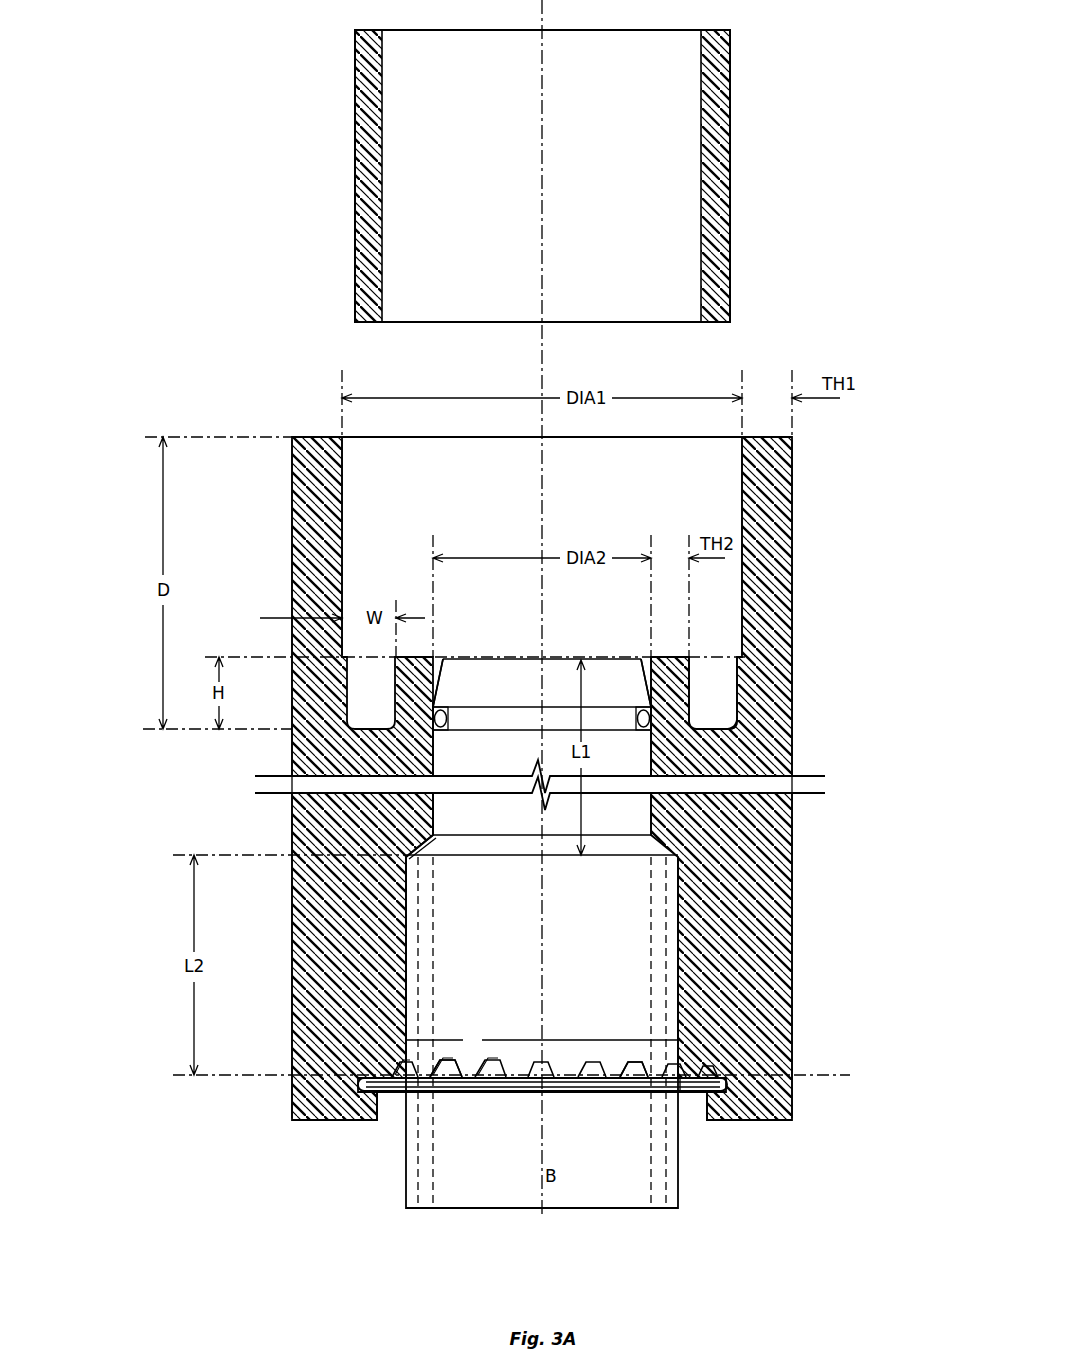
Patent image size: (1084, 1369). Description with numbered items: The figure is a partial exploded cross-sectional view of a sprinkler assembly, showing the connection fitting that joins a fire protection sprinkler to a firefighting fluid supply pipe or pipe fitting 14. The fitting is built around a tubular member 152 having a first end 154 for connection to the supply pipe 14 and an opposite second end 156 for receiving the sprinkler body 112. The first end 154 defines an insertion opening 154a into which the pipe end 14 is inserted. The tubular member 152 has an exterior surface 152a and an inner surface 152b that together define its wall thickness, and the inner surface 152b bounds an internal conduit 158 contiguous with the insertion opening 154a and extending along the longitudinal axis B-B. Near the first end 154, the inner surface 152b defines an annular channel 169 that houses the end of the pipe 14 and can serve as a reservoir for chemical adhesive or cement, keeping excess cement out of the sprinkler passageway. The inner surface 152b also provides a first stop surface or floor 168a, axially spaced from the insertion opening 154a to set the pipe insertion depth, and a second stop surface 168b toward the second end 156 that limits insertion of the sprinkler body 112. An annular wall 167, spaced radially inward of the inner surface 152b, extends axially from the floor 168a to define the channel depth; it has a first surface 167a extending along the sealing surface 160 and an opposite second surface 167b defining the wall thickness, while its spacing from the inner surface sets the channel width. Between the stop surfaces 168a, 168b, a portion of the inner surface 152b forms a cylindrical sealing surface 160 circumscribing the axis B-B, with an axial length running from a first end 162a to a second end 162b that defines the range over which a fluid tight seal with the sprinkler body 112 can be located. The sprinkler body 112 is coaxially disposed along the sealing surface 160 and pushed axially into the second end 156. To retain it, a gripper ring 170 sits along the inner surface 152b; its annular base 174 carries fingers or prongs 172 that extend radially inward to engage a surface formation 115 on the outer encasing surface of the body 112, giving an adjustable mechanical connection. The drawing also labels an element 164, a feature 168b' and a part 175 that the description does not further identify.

The fluid supply pipe or pipe fitting 14 is at (730, 246).
The sprinkler body 112 is at (635, 868).
The surface formation 115 is at (672, 962).
The tubular member 152 is at (725, 812).
The exterior surface 152a is at (292, 551).
The inner surface 152b is at (742, 493).
The first end 154 is at (300, 493).
The insertion opening 154a is at (676, 434).
The second end 156 is at (300, 1120).
The internal conduit 158 is at (520, 533).
The cylindrical sealing surface 160 is at (652, 718).
The first end of sealing surface 162a is at (443, 661).
The second end of sealing surface 162b is at (433, 826).
The spring washer 164 is at (730, 1082).
The annular wall 167 is at (656, 660).
The first surface of annular wall 167a is at (640, 661).
The second surface of annular wall 167b is at (745, 660).
The first stop surface or floor 168a is at (716, 738).
The second stop surface 168b is at (330, 861).
The tube chamfer 168b' is at (326, 833).
The annular channel 169 is at (720, 690).
The gripper ring 170 is at (450, 1072).
The fingers or prongs 172 is at (633, 1063).
The annular base 174 is at (700, 1080).
The washer rim 175 is at (692, 1085).